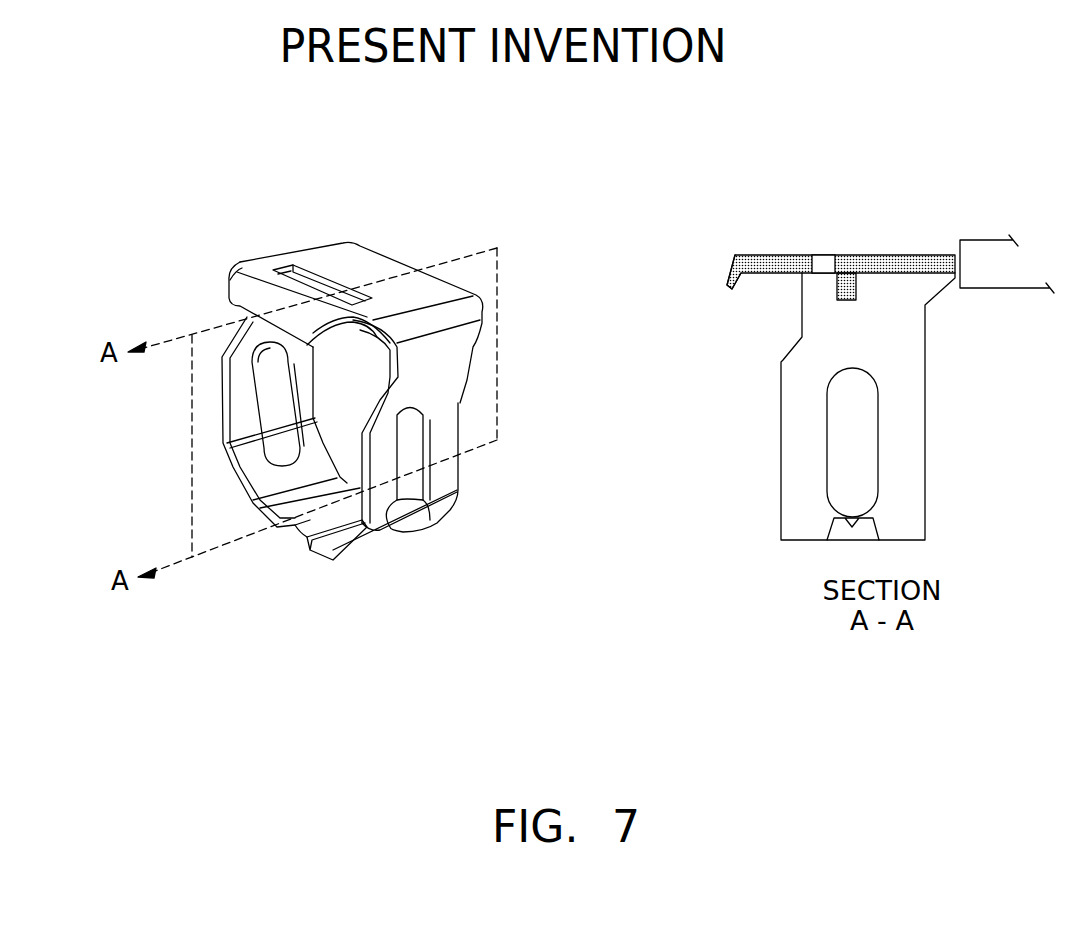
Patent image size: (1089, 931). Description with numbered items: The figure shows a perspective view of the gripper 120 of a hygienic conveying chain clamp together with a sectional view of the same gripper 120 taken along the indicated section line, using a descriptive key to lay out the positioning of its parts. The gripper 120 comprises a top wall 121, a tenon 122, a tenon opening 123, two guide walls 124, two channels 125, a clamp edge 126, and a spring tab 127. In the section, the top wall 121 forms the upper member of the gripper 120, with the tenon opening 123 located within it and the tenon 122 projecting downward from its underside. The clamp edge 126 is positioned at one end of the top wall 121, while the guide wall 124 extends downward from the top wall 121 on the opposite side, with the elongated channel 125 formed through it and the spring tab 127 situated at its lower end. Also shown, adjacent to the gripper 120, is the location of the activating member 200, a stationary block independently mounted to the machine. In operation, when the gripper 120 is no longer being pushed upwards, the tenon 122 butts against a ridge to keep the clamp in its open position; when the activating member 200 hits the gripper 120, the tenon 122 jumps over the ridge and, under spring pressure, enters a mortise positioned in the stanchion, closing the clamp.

The gripper 120 is at (208, 275).
The top wall 121 is at (916, 255).
The tenon 122 is at (847, 294).
The tenon opening 123 is at (826, 264).
The guide wall 124 is at (909, 433).
The channel 125 is at (837, 400).
The clamp edge 126 is at (728, 287).
The spring tab 127 is at (830, 529).
The activating member 200 is at (1005, 287).